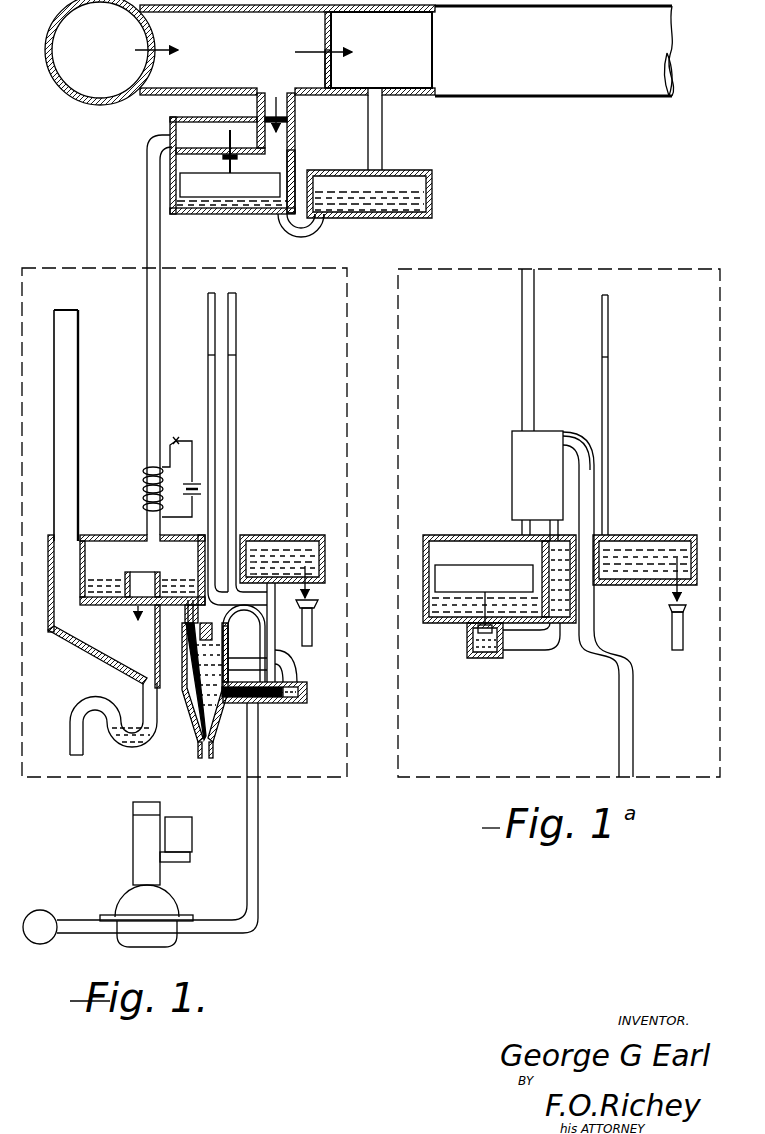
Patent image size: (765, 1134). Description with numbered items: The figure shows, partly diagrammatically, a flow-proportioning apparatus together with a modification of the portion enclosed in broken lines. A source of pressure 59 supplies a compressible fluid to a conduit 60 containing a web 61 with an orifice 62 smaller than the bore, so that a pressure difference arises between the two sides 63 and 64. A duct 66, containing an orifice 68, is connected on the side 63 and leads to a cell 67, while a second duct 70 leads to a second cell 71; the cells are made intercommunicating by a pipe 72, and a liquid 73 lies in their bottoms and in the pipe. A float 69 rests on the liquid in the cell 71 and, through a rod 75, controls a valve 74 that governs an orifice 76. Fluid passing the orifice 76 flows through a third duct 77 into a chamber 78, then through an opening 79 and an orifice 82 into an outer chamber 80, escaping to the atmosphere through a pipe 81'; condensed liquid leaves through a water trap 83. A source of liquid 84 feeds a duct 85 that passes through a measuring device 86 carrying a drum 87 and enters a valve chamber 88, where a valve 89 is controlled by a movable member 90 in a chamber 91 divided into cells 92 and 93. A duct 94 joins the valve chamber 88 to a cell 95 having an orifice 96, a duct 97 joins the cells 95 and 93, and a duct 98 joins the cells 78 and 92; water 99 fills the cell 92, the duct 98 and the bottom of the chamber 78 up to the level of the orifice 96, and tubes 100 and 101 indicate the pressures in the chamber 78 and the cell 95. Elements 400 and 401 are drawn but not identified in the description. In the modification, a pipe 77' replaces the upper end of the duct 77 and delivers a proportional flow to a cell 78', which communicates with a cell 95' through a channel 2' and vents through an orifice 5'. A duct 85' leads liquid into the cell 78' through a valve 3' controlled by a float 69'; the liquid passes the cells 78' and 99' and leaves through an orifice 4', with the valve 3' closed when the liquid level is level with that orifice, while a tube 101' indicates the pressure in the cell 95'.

In FIG. 1, the source of pressure 59 is at (63, 94).
In FIG. 1, the conduit 60 is at (418, 97).
In FIG. 1, the web 61 is at (333, 27).
In FIG. 1, the orifice 62 is at (333, 63).
In FIG. 1, the upstream side of the orifice 63 is at (243, 57).
In FIG. 1, the downstream side of the orifice 64 is at (381, 50).
In FIG. 1, the duct 66 is at (283, 106).
In FIG. 1, the cell 67 is at (289, 158).
In FIG. 1, the orifice 68 is at (273, 123).
In FIG. 1, the float 69 is at (203, 165).
In FIG. 1, the second duct 70 is at (383, 136).
In FIG. 1, the second cell 71 is at (434, 180).
In FIG. 1, the pipe 72 is at (312, 238).
In FIG. 1, the liquid 73 is at (434, 205).
In FIG. 1, the valve 74 is at (237, 157).
In FIG. 1, the rod 75 is at (240, 157).
In FIG. 1, the orifice 76 is at (232, 146).
In FIG. 1, the third duct 77 is at (171, 335).
In FIG. 1, the chamber 78 is at (126, 567).
In FIG. 1, the opening 79 is at (146, 573).
In FIG. 1, the outer chamber 80 is at (108, 639).
In FIG. 1, the pipe 81' is at (82, 425).
In FIG. 1, the orifice 82 is at (146, 607).
In FIG. 1, the water trap 83 is at (142, 718).
In FIG. 1, the source of liquid 84 is at (48, 936).
In FIG. 1, the duct 85 is at (157, 834).
In FIG. 1, the measuring device 86 is at (149, 940).
In FIG. 1, the drum 87 is at (193, 835).
In FIG. 1, the valve chamber 88 is at (266, 703).
In FIG. 1, the valve 89 is at (222, 695).
In FIG. 1, the movable member 90 is at (212, 735).
In FIG. 1, the chamber 91 is at (197, 742).
In FIG. 1, the cell 92 is at (189, 640).
In FIG. 1, the cell 93 is at (197, 692).
In FIG. 1, the duct 94 is at (272, 643).
In FIG. 1, the cell 95 is at (282, 547).
In FIG. 1, the orifice 96 is at (314, 591).
In FIG. 1, the duct 97 is at (243, 607).
In FIG. 1, the duct 98 is at (208, 612).
In FIG. 1, the water 99 is at (86, 612).
In FIG. 1, the tube 100 is at (210, 407).
In FIG. 1, the tube 101 is at (257, 442).
In FIG. 1, the coil 400 is at (152, 486).
In FIG. 1A, the pipe 77' is at (506, 402).
In FIG. 1A, the box 401 is at (522, 448).
In FIG. 1A, the tube 101' is at (629, 415).
In FIG. 1A, the channel 2' is at (598, 604).
In FIG. 1A, the duct 85' is at (649, 736).
In FIG. 1A, the cell 78' is at (499, 557).
In FIG. 1A, the orifice 5' is at (452, 509).
In FIG. 1A, the float 69' is at (484, 595).
In FIG. 1A, the valve 3' is at (494, 644).
In FIG. 1A, the cell 95' is at (645, 543).
In FIG. 1A, the cell 99' is at (647, 607).
In FIG. 1A, the orifice 4' is at (688, 604).